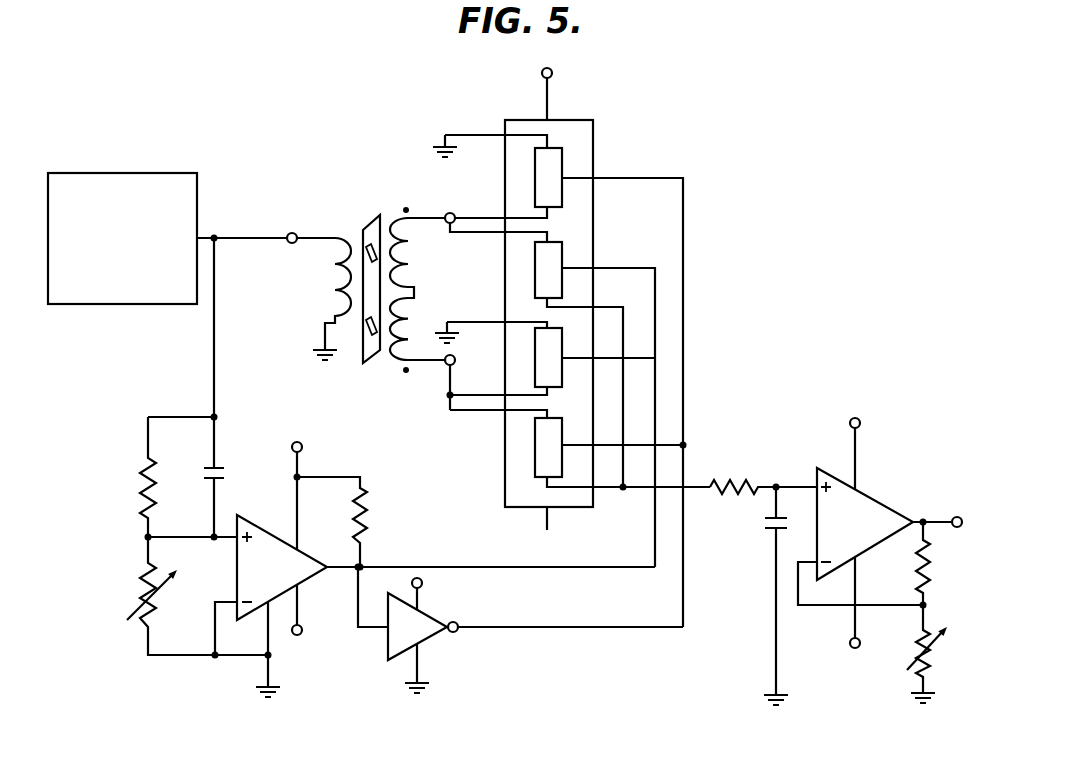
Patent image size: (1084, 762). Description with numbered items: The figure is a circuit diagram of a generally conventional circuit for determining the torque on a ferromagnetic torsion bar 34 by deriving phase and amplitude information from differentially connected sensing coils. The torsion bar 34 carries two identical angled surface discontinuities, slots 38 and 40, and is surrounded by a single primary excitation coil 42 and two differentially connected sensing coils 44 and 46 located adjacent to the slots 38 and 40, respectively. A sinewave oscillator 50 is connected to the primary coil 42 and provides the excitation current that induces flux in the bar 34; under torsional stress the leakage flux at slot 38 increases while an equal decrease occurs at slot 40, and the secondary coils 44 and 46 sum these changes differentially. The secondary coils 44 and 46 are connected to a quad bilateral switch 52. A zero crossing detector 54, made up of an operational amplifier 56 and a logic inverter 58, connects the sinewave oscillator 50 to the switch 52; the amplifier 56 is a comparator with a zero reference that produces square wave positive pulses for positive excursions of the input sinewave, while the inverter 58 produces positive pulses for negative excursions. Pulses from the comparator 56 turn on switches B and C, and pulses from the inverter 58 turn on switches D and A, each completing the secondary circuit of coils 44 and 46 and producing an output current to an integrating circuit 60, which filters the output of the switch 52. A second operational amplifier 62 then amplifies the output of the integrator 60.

The ferromagnetic torsion bar 34 is at (377, 209).
The slot 38 is at (370, 245).
The slot 40 is at (373, 352).
The primary excitation coil 42 is at (317, 298).
The sensing coil 44 is at (425, 250).
The sensing coil 46 is at (423, 313).
The sinewave oscillator 50 is at (133, 331).
The quad bilateral switch 52 is at (665, 143).
The zero crossing detector 54 is at (173, 682).
The operational amplifier 56 is at (245, 610).
The logic inverter 58 is at (392, 645).
The integrating circuit 60 is at (746, 546).
The second operational amplifier 62 is at (867, 490).